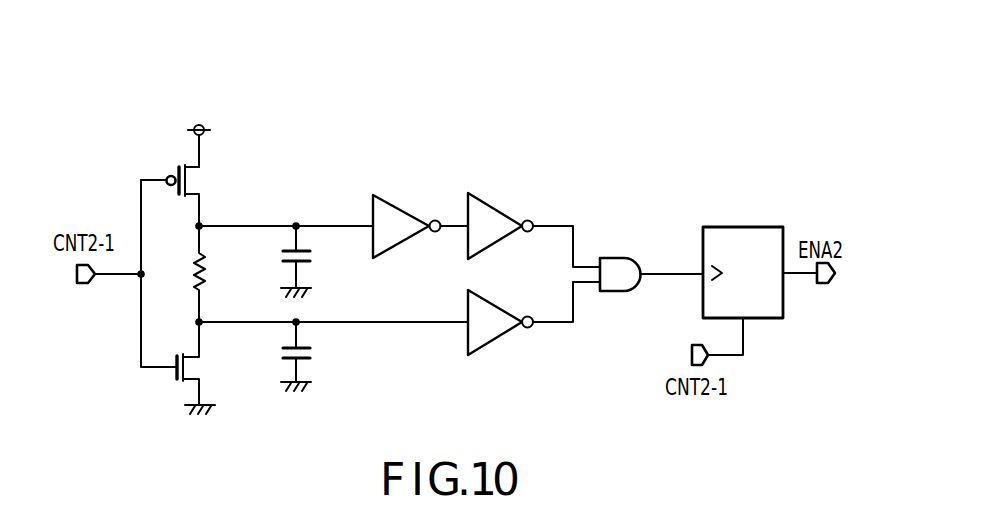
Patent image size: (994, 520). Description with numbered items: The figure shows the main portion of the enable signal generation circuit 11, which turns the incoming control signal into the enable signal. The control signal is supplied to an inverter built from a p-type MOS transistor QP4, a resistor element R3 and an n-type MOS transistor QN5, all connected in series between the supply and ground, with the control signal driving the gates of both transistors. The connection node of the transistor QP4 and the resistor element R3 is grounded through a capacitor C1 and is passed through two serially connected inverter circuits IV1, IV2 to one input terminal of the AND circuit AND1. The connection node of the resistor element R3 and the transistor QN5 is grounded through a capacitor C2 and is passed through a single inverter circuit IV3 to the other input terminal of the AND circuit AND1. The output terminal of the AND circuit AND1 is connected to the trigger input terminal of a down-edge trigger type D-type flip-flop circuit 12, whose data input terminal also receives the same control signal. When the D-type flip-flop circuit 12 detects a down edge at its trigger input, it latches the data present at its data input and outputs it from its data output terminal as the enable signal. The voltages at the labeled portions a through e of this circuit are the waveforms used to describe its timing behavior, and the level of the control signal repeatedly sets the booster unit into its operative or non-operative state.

The enable signal generation circuit 11 is at (561, 147).
The D-type flip-flop circuit 12 is at (763, 227).
The p-type MOS transistor QP4 is at (191, 195).
The n-type MOS transistor QN5 is at (209, 363).
The resistor element R3 is at (213, 274).
The capacitor C1 is at (312, 260).
The capacitor C2 is at (312, 355).
The inverter circuit IV1 is at (407, 219).
The inverter circuit IV2 is at (500, 222).
The inverter circuit IV3 is at (500, 319).
The AND circuit AND1 is at (615, 260).